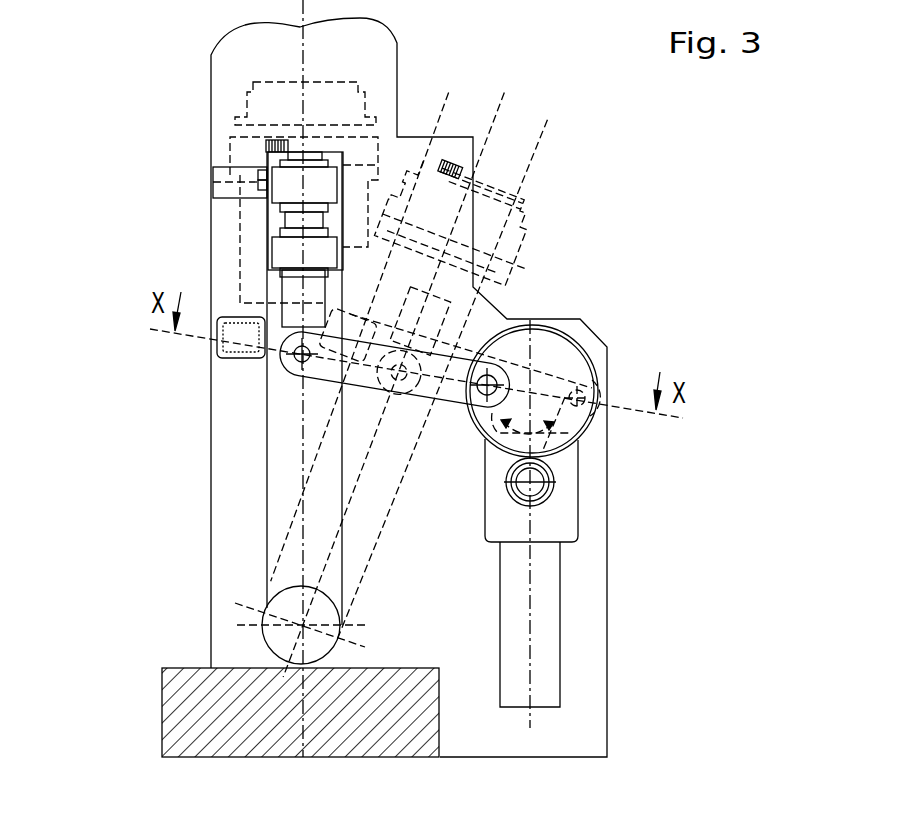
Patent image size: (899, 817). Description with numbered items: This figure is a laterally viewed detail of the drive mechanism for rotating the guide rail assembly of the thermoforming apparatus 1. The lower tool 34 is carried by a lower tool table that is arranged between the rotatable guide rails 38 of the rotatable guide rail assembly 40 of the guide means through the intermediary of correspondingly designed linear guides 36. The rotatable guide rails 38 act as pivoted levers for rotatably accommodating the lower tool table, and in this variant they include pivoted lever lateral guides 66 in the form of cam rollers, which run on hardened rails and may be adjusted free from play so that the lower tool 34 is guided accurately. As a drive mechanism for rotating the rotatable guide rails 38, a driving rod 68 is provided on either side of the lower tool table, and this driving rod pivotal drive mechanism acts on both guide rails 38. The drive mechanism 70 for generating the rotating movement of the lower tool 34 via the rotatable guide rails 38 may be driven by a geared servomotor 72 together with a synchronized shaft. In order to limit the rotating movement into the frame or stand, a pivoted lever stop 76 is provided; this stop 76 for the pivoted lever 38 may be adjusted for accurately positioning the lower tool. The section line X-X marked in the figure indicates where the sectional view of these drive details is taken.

The thermoforming apparatus 1 is at (160, 610).
The lower tool 34 is at (353, 107).
The linear guides 36 is at (290, 192).
The rotatable guide rails 38 is at (313, 477).
The rotatable guide rail assembly 40 is at (390, 570).
The pivoted lever lateral guides 66 is at (276, 140).
The driving rod 68 is at (330, 373).
The drive mechanism 70 is at (560, 488).
The geared servomotor 72 is at (545, 666).
The pivoted lever stop 76 is at (228, 190).